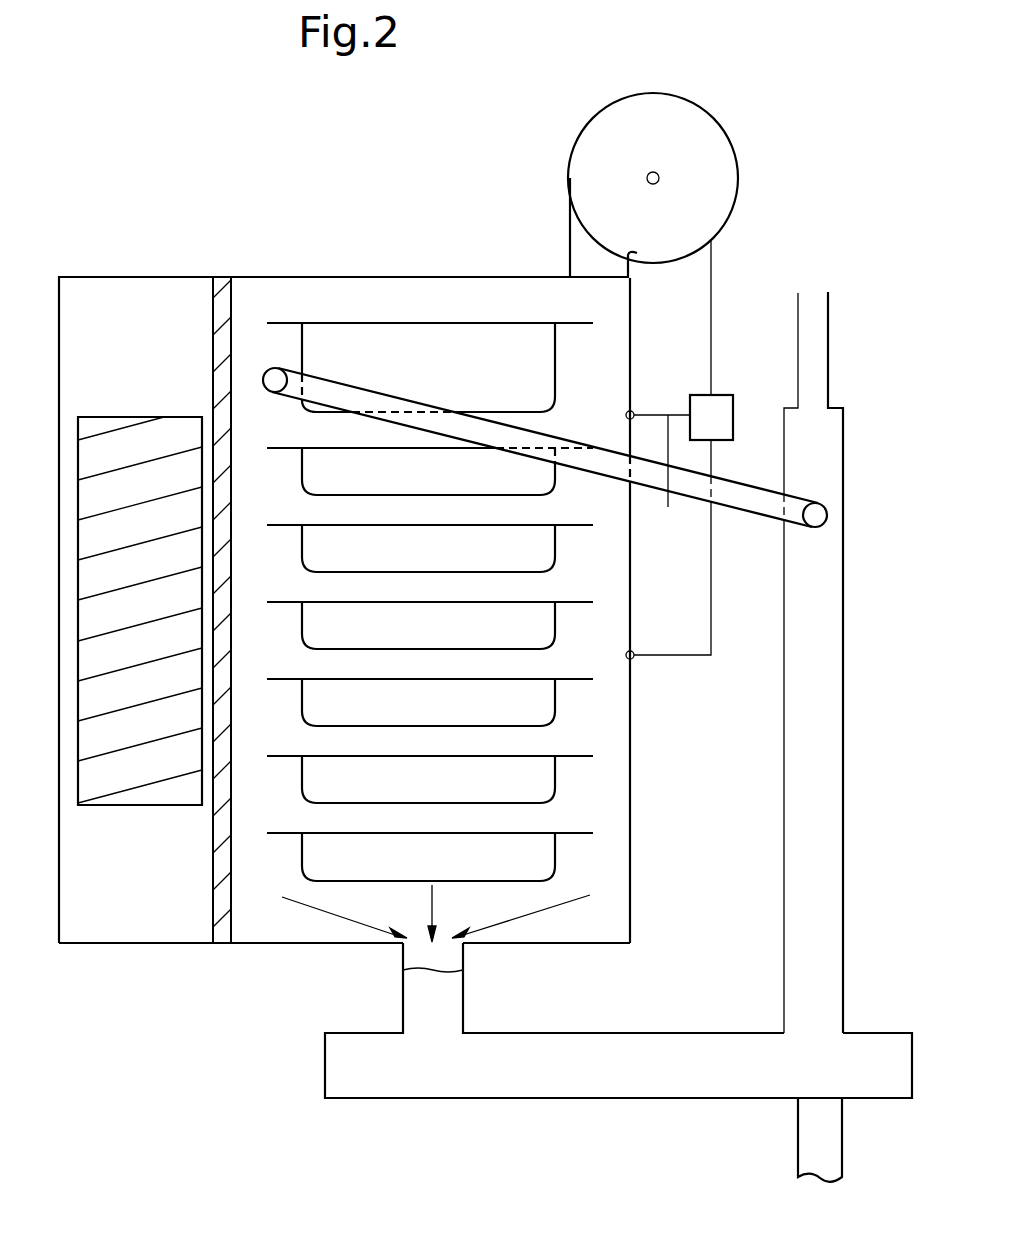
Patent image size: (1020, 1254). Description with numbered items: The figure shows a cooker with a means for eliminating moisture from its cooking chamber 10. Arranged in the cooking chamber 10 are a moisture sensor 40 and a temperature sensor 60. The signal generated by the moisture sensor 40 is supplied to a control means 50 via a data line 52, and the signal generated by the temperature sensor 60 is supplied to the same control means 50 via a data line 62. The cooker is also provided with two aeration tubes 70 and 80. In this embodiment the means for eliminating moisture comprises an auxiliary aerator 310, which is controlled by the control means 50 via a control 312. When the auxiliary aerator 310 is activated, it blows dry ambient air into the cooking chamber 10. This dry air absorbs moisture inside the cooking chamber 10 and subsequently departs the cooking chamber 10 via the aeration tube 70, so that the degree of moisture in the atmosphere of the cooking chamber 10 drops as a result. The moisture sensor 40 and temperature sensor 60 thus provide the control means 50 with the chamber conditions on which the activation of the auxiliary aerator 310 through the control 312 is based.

The cooking chamber 10 is at (613, 801).
The moisture sensor 40 is at (634, 659).
The control means 50 is at (733, 412).
The data line 52 is at (713, 628).
The temperature sensor 60 is at (634, 411).
The data line 62 is at (671, 483).
The aeration tube 70 is at (740, 510).
The aeration tube 80 is at (843, 583).
The auxiliary aerator 310 is at (595, 189).
The control 312 is at (711, 337).